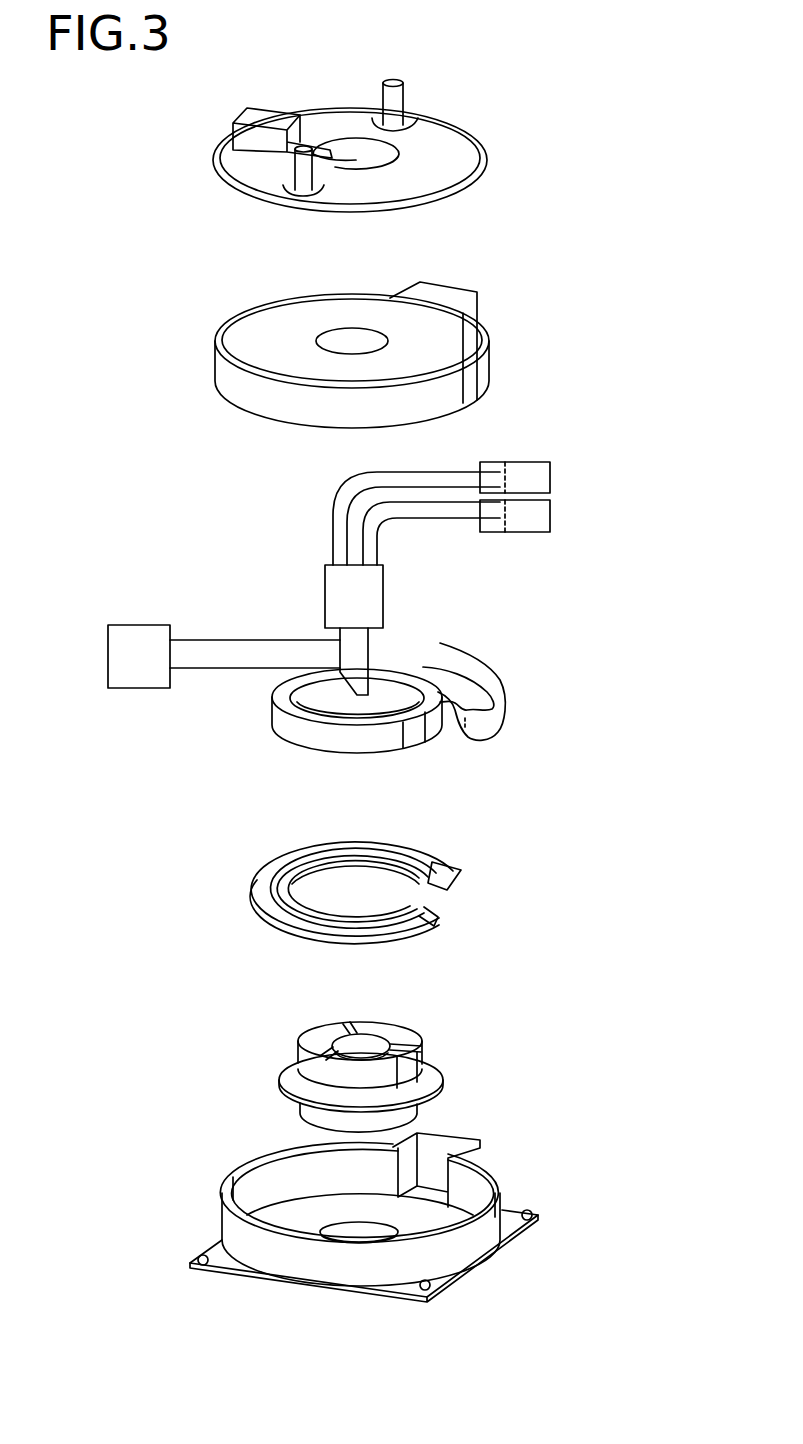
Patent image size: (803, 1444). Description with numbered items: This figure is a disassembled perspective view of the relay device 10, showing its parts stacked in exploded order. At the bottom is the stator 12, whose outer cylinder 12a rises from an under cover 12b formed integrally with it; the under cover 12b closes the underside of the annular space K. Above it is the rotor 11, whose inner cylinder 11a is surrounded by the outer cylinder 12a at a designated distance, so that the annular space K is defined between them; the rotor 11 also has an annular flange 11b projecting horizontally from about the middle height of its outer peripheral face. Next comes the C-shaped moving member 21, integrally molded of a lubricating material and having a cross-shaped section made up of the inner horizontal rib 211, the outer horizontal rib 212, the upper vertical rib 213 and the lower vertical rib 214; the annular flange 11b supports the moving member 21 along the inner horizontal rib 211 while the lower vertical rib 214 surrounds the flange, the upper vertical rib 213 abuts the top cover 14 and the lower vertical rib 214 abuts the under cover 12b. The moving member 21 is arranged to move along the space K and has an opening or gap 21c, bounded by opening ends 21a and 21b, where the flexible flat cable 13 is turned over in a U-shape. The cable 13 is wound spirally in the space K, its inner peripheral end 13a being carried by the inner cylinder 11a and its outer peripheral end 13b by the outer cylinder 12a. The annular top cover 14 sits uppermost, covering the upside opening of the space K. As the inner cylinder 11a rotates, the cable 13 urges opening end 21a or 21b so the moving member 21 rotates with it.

The relay device 10 is at (598, 236).
The annular top cover 14 is at (467, 332).
The flexible flat cable 13 is at (378, 607).
The inner peripheral end 13a is at (363, 655).
The outer peripheral end 13b is at (229, 652).
The C-shaped moving member 21 is at (361, 891).
The opening end 21a is at (450, 877).
The opening end 21b is at (428, 933).
The opening (gap) 21c is at (438, 910).
The inner horizontal rib 211 is at (348, 863).
The outer horizontal rib 212 is at (257, 888).
The upper vertical rib 213 is at (300, 848).
The lower vertical rib 214 is at (303, 930).
The rotor 11 is at (425, 1060).
The inner cylinder 11a is at (392, 1028).
The annular flange 11b is at (428, 1080).
The stator 12 is at (317, 1220).
The outer cylinder 12a is at (233, 1173).
The under cover 12b is at (303, 1217).
The annular space K is at (271, 1172).